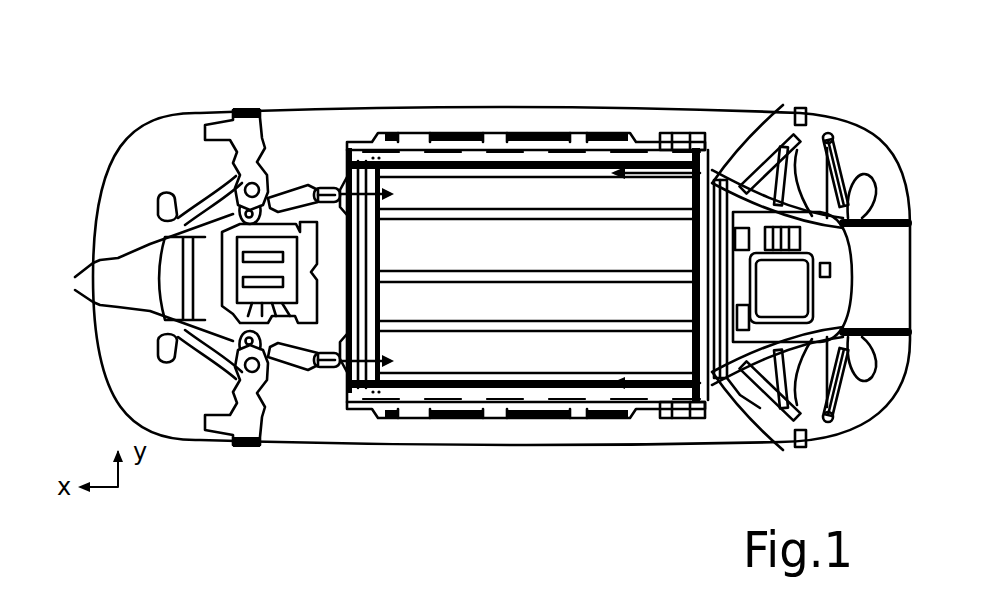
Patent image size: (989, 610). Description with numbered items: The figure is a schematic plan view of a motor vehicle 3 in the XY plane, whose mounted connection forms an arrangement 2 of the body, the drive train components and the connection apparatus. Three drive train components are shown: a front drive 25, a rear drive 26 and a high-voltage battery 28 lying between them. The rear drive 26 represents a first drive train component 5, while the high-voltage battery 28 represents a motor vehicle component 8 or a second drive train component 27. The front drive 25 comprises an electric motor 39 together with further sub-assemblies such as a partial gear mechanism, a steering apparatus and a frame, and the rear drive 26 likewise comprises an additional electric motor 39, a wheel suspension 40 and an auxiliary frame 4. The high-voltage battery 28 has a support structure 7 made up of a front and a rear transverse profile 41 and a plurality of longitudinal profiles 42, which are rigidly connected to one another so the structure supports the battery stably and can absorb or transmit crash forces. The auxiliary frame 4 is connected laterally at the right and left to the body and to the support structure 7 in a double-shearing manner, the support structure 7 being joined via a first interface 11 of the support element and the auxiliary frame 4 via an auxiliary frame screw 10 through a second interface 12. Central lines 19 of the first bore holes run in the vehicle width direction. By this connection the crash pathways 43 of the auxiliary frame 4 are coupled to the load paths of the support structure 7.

The arrangement 2 is at (722, 88).
The motor vehicle 3 is at (487, 108).
The auxiliary frame 4 is at (810, 135).
The first drive train component 5 is at (728, 412).
The support structure 7 is at (587, 165).
The motor vehicle component 8 is at (633, 141).
The auxiliary frame screw 10 is at (725, 176).
The first interface 11 is at (705, 410).
The second interface 12 is at (735, 382).
The central lines 19 is at (718, 130).
The front drive 25 is at (281, 410).
The rear drive 26 is at (727, 378).
The second drive train component 27 is at (640, 142).
The high-voltage battery 28 is at (660, 142).
The electric motor 39 is at (260, 262).
The wheel suspension 40 is at (818, 386).
The transverse profile 41 is at (347, 398).
The longitudinal profiles 42 is at (421, 386).
The crash pathways 43 is at (918, 280).